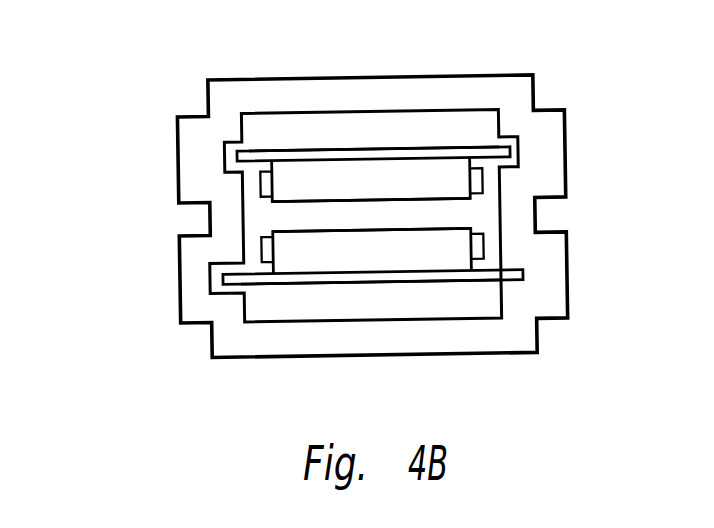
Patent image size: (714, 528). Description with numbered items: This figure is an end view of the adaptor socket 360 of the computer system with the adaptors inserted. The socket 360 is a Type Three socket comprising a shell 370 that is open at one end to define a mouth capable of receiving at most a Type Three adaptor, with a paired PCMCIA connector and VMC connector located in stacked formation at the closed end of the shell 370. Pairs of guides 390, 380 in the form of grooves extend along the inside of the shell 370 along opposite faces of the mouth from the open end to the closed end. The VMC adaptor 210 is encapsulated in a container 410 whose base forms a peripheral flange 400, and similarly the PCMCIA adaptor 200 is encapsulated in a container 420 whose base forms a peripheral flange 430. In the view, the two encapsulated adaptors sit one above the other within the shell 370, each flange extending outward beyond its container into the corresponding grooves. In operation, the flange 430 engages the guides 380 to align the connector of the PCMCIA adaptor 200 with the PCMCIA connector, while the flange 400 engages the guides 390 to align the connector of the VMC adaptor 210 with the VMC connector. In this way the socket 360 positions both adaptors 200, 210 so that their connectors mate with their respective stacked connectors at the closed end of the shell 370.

The Type 3 socket 360 is at (105, 83).
The shell 370 is at (178, 187).
The guides 380 is at (222, 283).
The guides 390 is at (226, 153).
The peripheral flange 400 is at (288, 152).
The container 410 is at (430, 173).
The container 420 is at (430, 257).
The peripheral flange 430 is at (292, 283).
The PCMCIA adaptor 200 is at (303, 230).
The VMC adaptor 210 is at (443, 201).